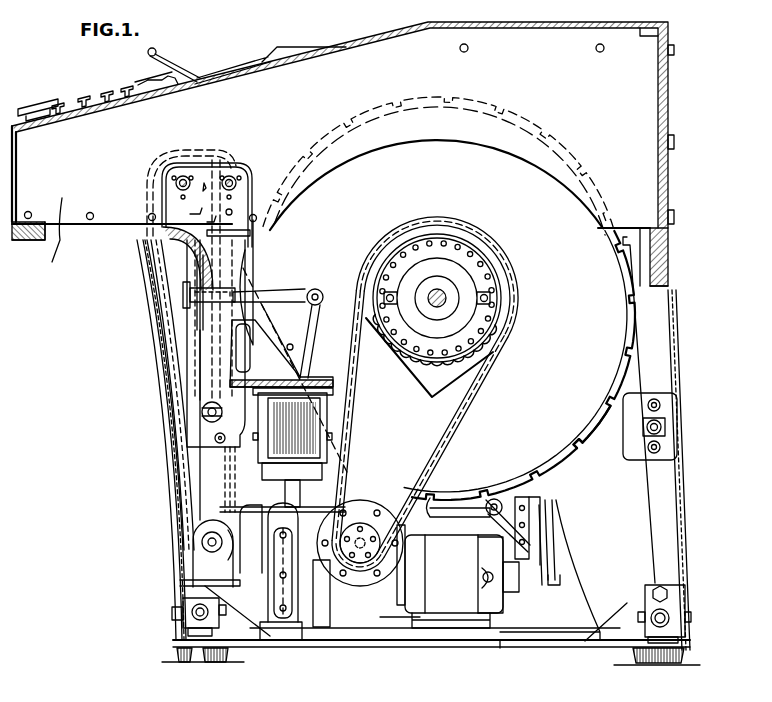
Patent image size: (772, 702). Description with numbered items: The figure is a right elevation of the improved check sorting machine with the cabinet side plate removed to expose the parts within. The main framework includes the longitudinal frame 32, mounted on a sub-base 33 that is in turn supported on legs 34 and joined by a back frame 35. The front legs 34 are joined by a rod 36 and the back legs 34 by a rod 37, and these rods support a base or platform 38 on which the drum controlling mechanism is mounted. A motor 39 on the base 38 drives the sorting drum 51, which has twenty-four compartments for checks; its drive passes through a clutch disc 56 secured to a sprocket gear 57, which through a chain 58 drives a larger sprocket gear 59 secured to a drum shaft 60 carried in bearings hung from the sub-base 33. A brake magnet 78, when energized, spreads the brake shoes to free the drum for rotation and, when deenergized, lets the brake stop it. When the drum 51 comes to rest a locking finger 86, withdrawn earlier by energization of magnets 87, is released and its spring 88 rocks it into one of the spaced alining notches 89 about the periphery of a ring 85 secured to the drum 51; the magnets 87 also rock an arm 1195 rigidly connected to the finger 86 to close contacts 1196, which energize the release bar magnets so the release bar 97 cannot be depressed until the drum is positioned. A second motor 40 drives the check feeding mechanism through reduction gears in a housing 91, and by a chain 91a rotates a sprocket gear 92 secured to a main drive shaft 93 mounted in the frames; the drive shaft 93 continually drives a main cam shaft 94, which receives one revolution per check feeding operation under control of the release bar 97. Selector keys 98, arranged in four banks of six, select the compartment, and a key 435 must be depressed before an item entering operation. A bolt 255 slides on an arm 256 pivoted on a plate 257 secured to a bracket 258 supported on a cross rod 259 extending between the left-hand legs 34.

The longitudinal frame 32 is at (56, 242).
The sub-base 33 is at (683, 268).
The legs 34 is at (198, 492).
The back frame 35 is at (668, 112).
The rod 36 is at (183, 606).
The rod 37 is at (652, 616).
The base 38 is at (487, 642).
The motor 39 is at (449, 563).
The motor 40 is at (271, 571).
The sorting drum 51 is at (449, 298).
The clutch disc 56 is at (372, 505).
The sprocket gear 57 is at (400, 502).
The chain 58 is at (442, 452).
The sprocket gear 59 is at (414, 374).
The drum shaft 60 is at (437, 292).
The brake magnet 78 is at (282, 450).
The ring 85 is at (585, 416).
The locking finger 86 is at (484, 502).
The magnets 87 is at (496, 537).
The spring 88 is at (520, 512).
The alining notches 89 is at (578, 450).
The housing 91 is at (193, 543).
The chain 91a is at (172, 366).
The sprocket gear 92 is at (204, 214).
The main drive shaft 93 is at (176, 182).
The main cam shaft 94 is at (233, 178).
The release bar 97 is at (46, 104).
The selector keys 98 is at (127, 87).
The bolt 255 is at (245, 272).
The arm 256 is at (296, 293).
The plate 257 is at (312, 326).
The bracket 258 is at (310, 364).
The cross rod 259 is at (214, 376).
The key 435 is at (246, 62).
The arm 1195 is at (549, 549).
The contacts 1196 is at (546, 558).